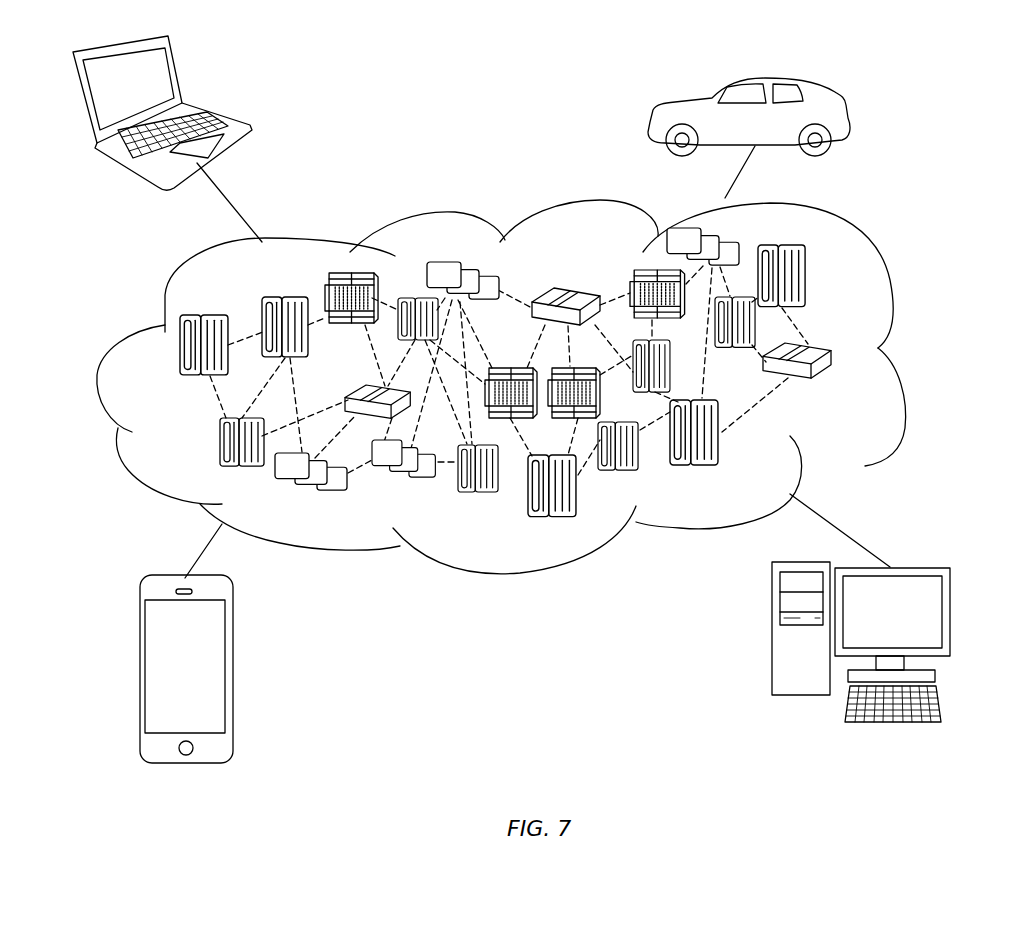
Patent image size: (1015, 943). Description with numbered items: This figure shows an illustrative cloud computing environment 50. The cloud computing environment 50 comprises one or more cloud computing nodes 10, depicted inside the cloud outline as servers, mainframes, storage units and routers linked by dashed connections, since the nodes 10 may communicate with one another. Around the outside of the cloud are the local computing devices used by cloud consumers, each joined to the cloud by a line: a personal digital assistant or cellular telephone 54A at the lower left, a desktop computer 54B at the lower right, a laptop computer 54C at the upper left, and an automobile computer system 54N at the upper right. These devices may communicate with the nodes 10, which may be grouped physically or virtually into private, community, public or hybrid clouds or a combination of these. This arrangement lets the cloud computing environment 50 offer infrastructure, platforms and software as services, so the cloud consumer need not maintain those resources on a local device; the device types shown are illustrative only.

The cloud computing node 10 is at (834, 424).
The cloud computing environment 50 is at (509, 382).
The personal digital assistant or cellular telephone 54A is at (232, 667).
The desktop computer 54B is at (951, 610).
The laptop computer 54C is at (178, 71).
The automobile computer system 54N is at (778, 78).